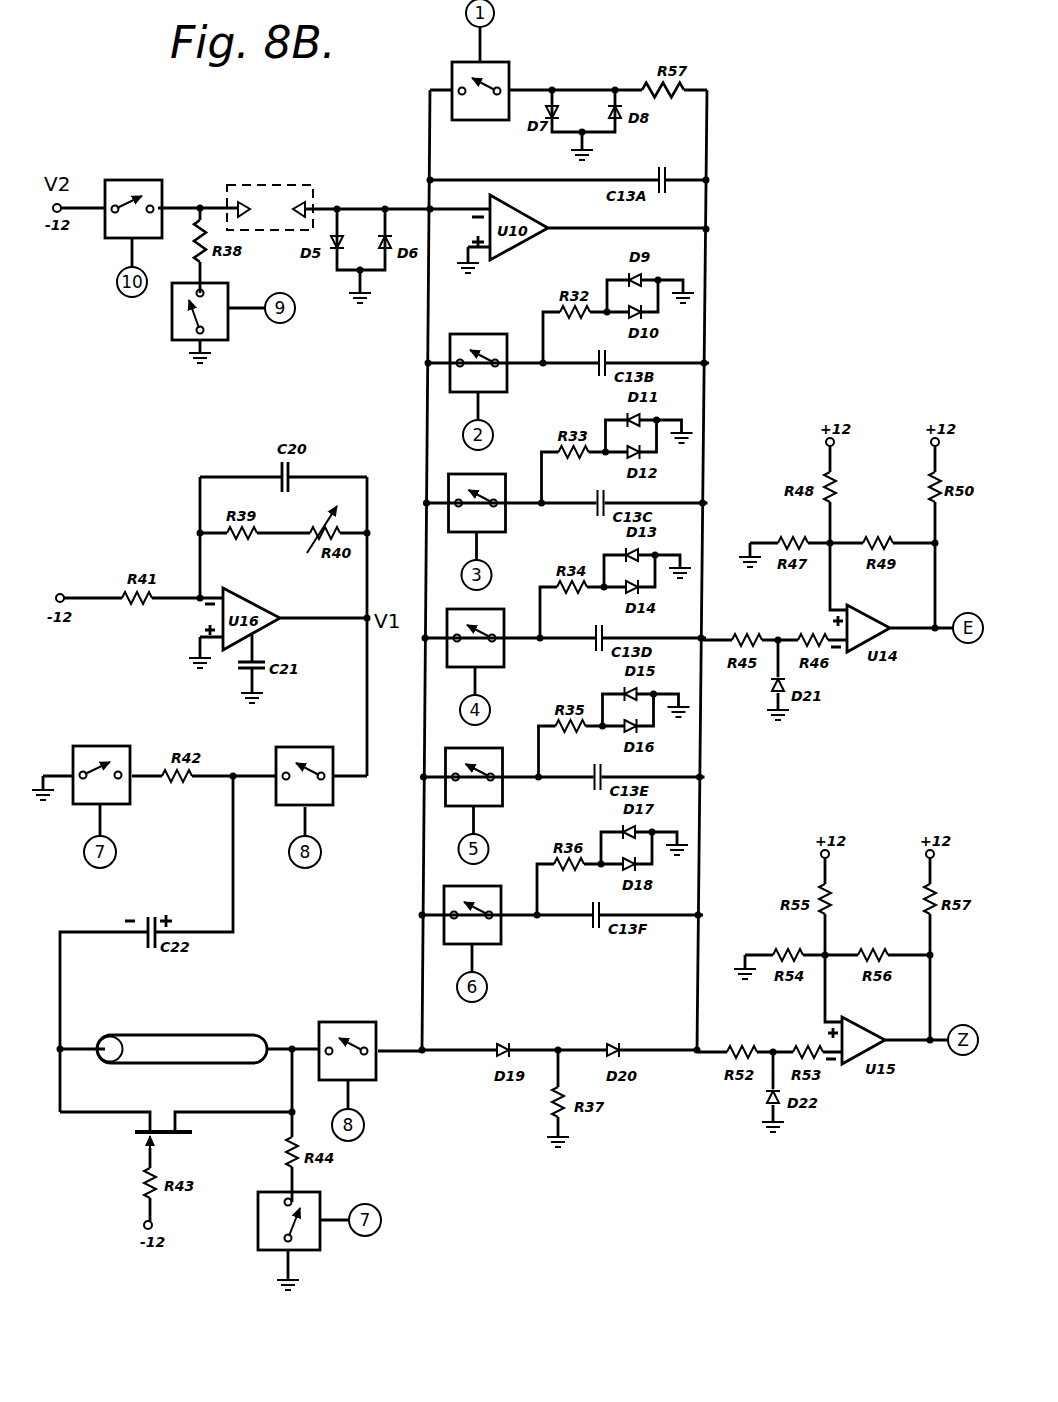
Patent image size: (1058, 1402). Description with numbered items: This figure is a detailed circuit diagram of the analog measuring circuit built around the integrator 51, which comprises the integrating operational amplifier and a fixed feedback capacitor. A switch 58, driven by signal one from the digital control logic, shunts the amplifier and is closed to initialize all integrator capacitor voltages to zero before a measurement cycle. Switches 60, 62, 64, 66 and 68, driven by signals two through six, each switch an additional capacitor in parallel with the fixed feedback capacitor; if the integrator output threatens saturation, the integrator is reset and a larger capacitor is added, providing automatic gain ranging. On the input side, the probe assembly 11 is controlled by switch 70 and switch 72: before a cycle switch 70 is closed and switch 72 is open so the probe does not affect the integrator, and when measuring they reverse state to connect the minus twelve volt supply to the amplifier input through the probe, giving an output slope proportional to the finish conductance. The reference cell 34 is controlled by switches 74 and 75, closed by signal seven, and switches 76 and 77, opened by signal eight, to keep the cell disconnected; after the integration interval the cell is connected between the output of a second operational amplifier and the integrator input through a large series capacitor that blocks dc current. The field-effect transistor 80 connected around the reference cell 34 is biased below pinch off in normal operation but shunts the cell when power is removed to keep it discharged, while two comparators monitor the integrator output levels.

The probe assembly 11 is at (299, 178).
The reference cell 34 is at (180, 1035).
The integrator 51 is at (736, 211).
The switch 58 is at (500, 62).
The switch 60 is at (502, 372).
The switch 62 is at (501, 512).
The switch 64 is at (499, 647).
The switch 66 is at (498, 786).
The switch 68 is at (496, 924).
The switch 70 is at (172, 324).
The switch 72 is at (132, 180).
The switch 74 is at (100, 746).
The switch 75 is at (312, 1253).
The switch 76 is at (333, 797).
The switch 77 is at (377, 1083).
The field-effect transistor 80 is at (140, 1137).